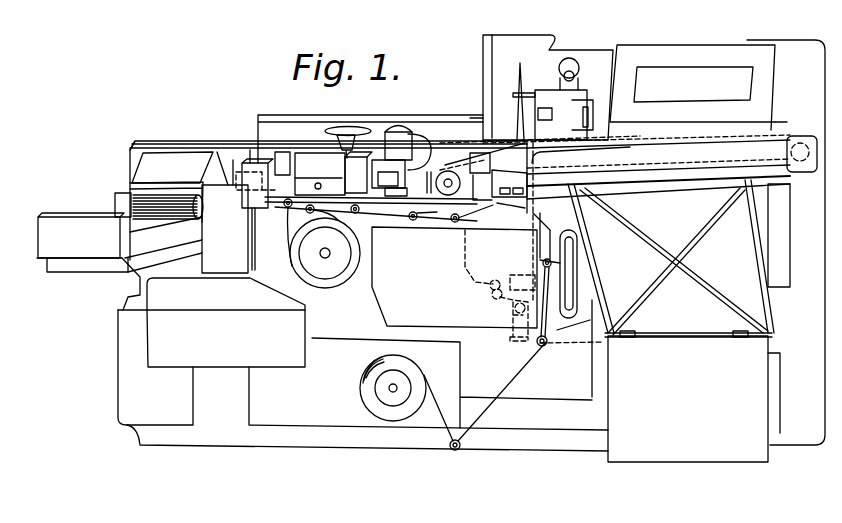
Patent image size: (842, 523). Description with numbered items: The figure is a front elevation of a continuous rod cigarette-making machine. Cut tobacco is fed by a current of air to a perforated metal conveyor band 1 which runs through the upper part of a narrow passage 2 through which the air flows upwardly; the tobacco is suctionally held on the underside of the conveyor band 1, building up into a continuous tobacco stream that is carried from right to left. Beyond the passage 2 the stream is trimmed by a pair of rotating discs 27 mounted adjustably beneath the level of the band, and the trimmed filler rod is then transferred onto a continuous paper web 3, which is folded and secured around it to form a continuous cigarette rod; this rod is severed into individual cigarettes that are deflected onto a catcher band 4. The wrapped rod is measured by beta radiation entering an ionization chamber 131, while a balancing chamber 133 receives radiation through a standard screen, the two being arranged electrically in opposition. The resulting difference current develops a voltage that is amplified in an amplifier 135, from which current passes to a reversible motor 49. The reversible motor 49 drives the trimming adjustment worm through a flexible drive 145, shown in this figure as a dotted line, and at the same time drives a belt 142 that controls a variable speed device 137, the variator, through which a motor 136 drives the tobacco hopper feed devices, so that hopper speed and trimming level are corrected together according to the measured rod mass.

The perforated metal conveyor band 1 is at (753, 163).
The narrow passage 2 is at (727, 279).
The continuous paper web 3 is at (482, 213).
The catcher band 4 is at (140, 230).
The rotating discs 27 is at (540, 215).
The reversible motor 49 is at (525, 273).
The ionization chamber 131 is at (258, 185).
The ionization chamber 133 is at (240, 197).
The amplifier 135 is at (506, 61).
The motor 136 is at (610, 338).
The variable speed device 137 is at (511, 316).
The belt 142 is at (491, 305).
The flexible drive 145 is at (462, 258).